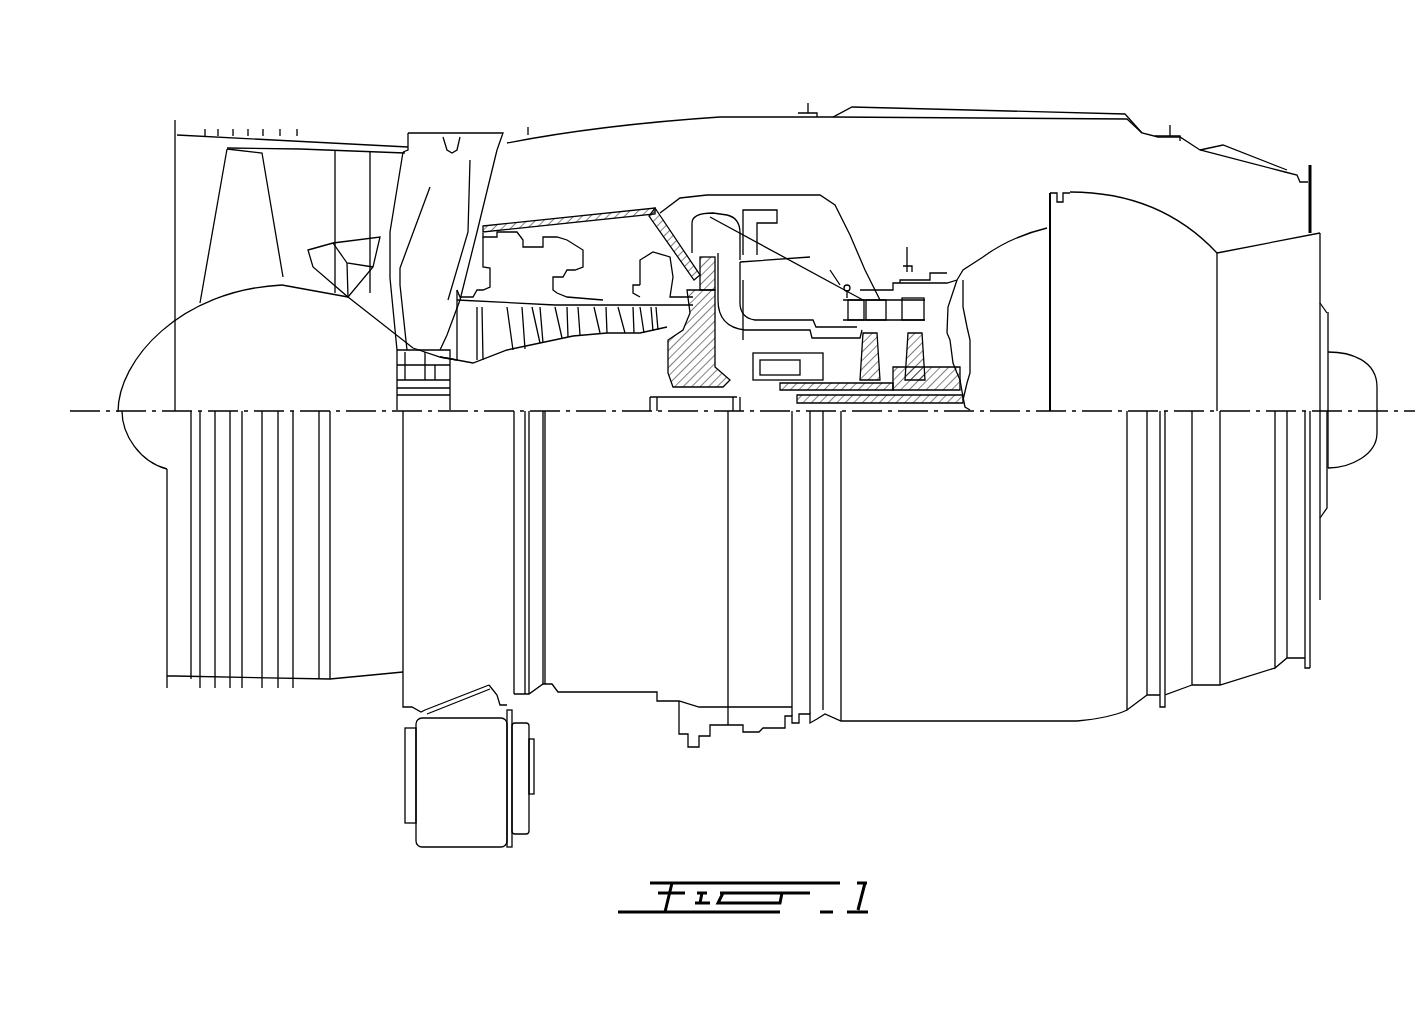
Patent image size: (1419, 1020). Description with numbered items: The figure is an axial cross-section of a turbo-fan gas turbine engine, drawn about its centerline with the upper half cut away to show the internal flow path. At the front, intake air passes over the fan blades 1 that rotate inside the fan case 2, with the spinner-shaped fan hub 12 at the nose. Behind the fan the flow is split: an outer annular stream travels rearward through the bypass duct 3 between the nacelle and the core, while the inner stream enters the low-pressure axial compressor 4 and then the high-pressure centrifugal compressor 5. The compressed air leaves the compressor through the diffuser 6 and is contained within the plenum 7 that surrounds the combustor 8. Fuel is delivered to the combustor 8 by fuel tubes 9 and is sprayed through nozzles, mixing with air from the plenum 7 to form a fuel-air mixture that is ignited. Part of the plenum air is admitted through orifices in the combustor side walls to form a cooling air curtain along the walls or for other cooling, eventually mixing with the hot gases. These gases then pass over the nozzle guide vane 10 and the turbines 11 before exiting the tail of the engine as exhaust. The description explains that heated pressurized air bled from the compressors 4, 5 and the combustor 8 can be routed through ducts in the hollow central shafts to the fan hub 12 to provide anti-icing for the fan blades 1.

The fan blades 1 is at (233, 252).
The fan case 2 is at (307, 135).
The bypass duct 3 is at (580, 185).
The low-pressure axial compressor 4 is at (495, 347).
The high-pressure centrifugal compressor 5 is at (663, 335).
The diffuser 6 is at (725, 230).
The plenum 7 is at (830, 272).
The combustor 8 is at (763, 310).
The fuel tubes 9 is at (800, 273).
The nozzle guide vane 10 is at (858, 300).
The turbines 11 is at (878, 300).
The fan hub 12 is at (237, 362).